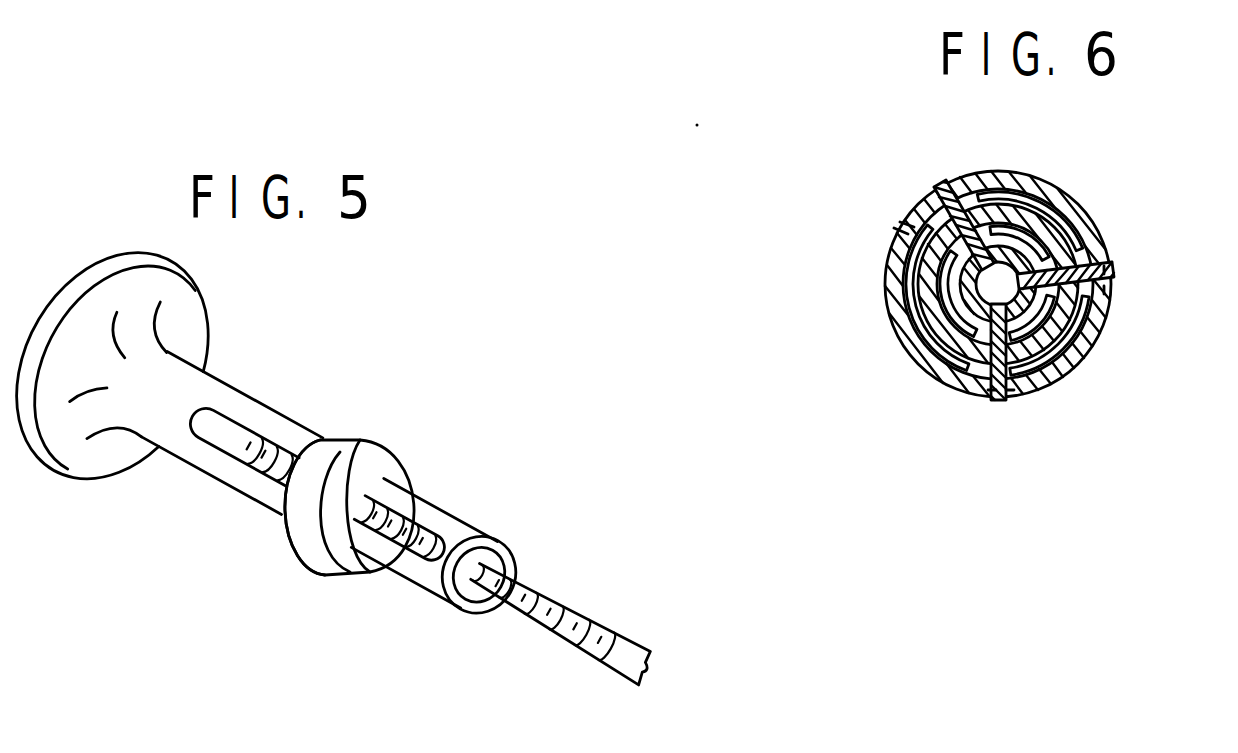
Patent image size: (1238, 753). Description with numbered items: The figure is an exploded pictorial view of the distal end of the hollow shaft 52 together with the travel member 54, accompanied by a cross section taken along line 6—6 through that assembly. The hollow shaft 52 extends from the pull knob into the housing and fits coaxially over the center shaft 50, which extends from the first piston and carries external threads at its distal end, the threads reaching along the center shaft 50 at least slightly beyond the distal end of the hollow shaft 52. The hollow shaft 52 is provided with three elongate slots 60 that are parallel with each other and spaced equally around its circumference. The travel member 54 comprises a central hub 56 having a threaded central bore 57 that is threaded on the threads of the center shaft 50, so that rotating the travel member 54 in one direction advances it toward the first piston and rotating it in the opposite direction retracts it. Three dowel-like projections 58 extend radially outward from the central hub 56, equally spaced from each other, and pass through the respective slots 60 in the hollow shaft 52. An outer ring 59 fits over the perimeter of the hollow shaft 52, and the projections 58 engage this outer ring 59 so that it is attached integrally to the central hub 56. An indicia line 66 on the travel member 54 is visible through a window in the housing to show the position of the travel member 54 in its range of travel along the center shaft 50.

In FIG. 5, the center shaft 50 is at (277, 450).
In FIG. 5, the hollow shaft 52 is at (463, 530).
In FIG. 6, the hollow shaft 52 is at (1007, 215).
In FIG. 5, the travel member 54 is at (417, 454).
In FIG. 6, the travel member 54 is at (1117, 215).
In FIG. 6, the central hub 56 is at (962, 276).
In FIG. 6, the threaded central bore 57 is at (1012, 262).
In FIG. 6, the dowel-like projections 58 is at (933, 193).
In FIG. 5, the outer ring 59 is at (280, 523).
In FIG. 6, the outer ring 59 is at (902, 330).
In FIG. 5, the elongate slots 60 is at (238, 420).
In FIG. 6, the elongate slots 60 is at (900, 222).
In FIG. 5, the indicia line 66 is at (343, 447).
In FIG. 5, the section line 6- 6 is at (382, 437).